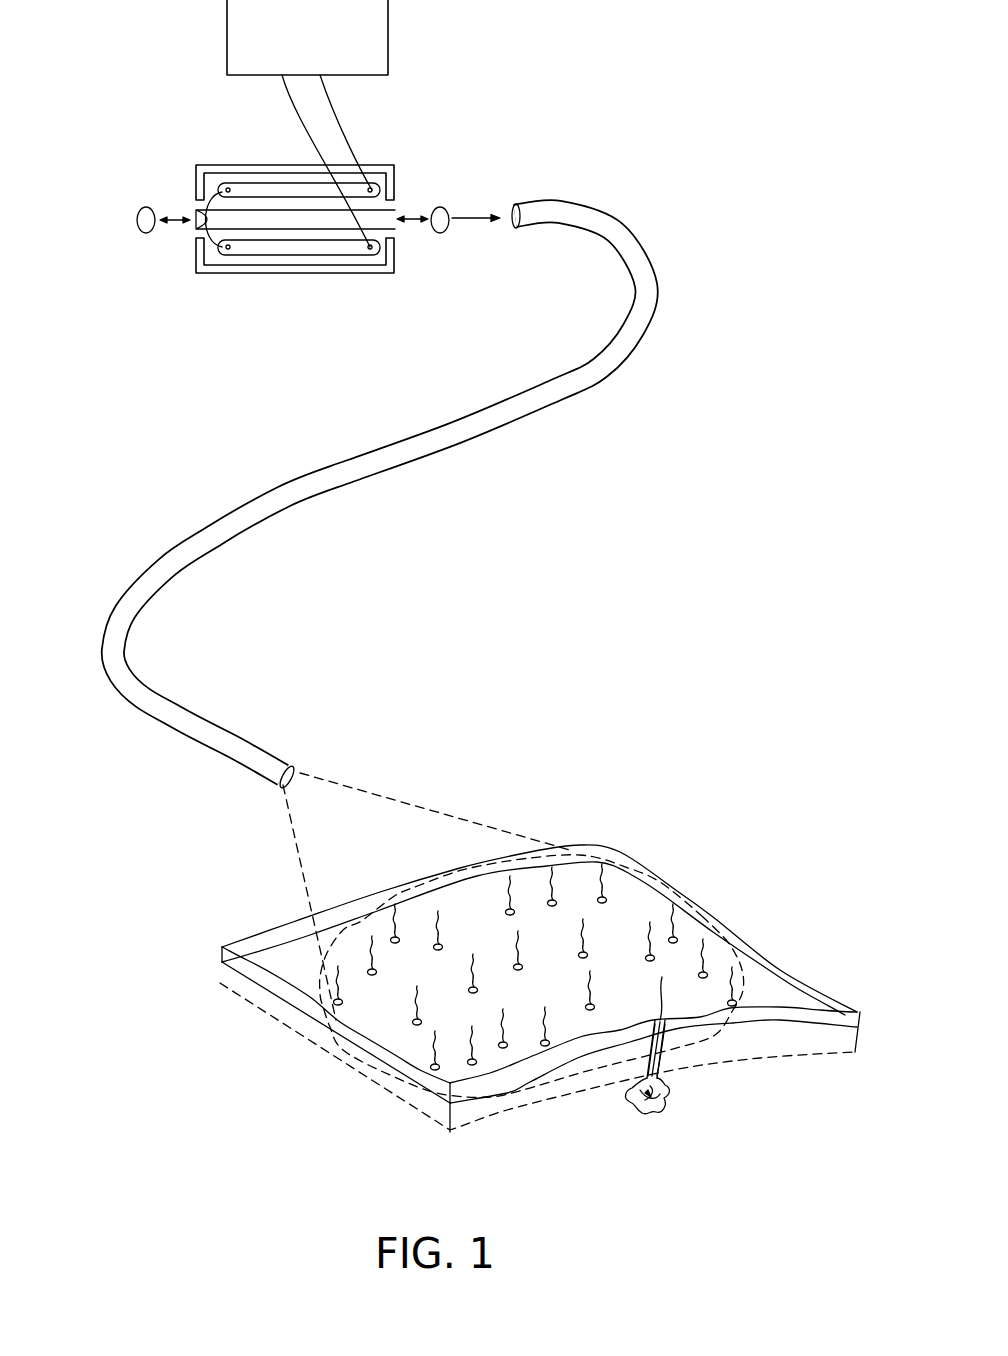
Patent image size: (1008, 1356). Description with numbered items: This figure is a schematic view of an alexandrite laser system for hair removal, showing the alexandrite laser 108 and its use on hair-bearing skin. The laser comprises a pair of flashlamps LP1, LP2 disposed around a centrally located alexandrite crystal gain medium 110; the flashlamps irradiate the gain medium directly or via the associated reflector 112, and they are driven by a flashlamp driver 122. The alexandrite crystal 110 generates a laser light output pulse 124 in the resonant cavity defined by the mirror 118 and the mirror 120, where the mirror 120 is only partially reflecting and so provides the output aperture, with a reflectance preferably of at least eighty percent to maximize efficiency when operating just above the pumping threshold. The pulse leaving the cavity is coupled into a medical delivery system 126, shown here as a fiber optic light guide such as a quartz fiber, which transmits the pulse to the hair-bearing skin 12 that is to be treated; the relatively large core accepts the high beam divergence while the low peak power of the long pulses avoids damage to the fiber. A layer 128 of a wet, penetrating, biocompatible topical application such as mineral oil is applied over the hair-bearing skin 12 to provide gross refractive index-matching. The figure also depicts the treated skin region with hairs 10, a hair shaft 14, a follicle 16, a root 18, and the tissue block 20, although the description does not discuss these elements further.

The alexandrite laser 108 is at (124, 102).
The flashlamp driver 122 is at (388, 48).
The reflector 112 is at (384, 162).
The alexandrite crystal gain medium 110 is at (397, 208).
The mirror 118 is at (155, 238).
The mirror 120 is at (450, 235).
The laser light output pulse 124 is at (465, 212).
The medical delivery system 126 is at (560, 412).
The flashlamp LP1 is at (326, 255).
The flashlamp LP2 is at (240, 186).
The hair-bearing skin 12 is at (765, 955).
The layer 128 is at (837, 997).
The skin tissue block 20 is at (855, 1052).
The hair 10 is at (648, 946).
The hair shaft 14 is at (652, 1023).
The hair follicle 16 is at (668, 1092).
The hair root 18 is at (642, 1113).